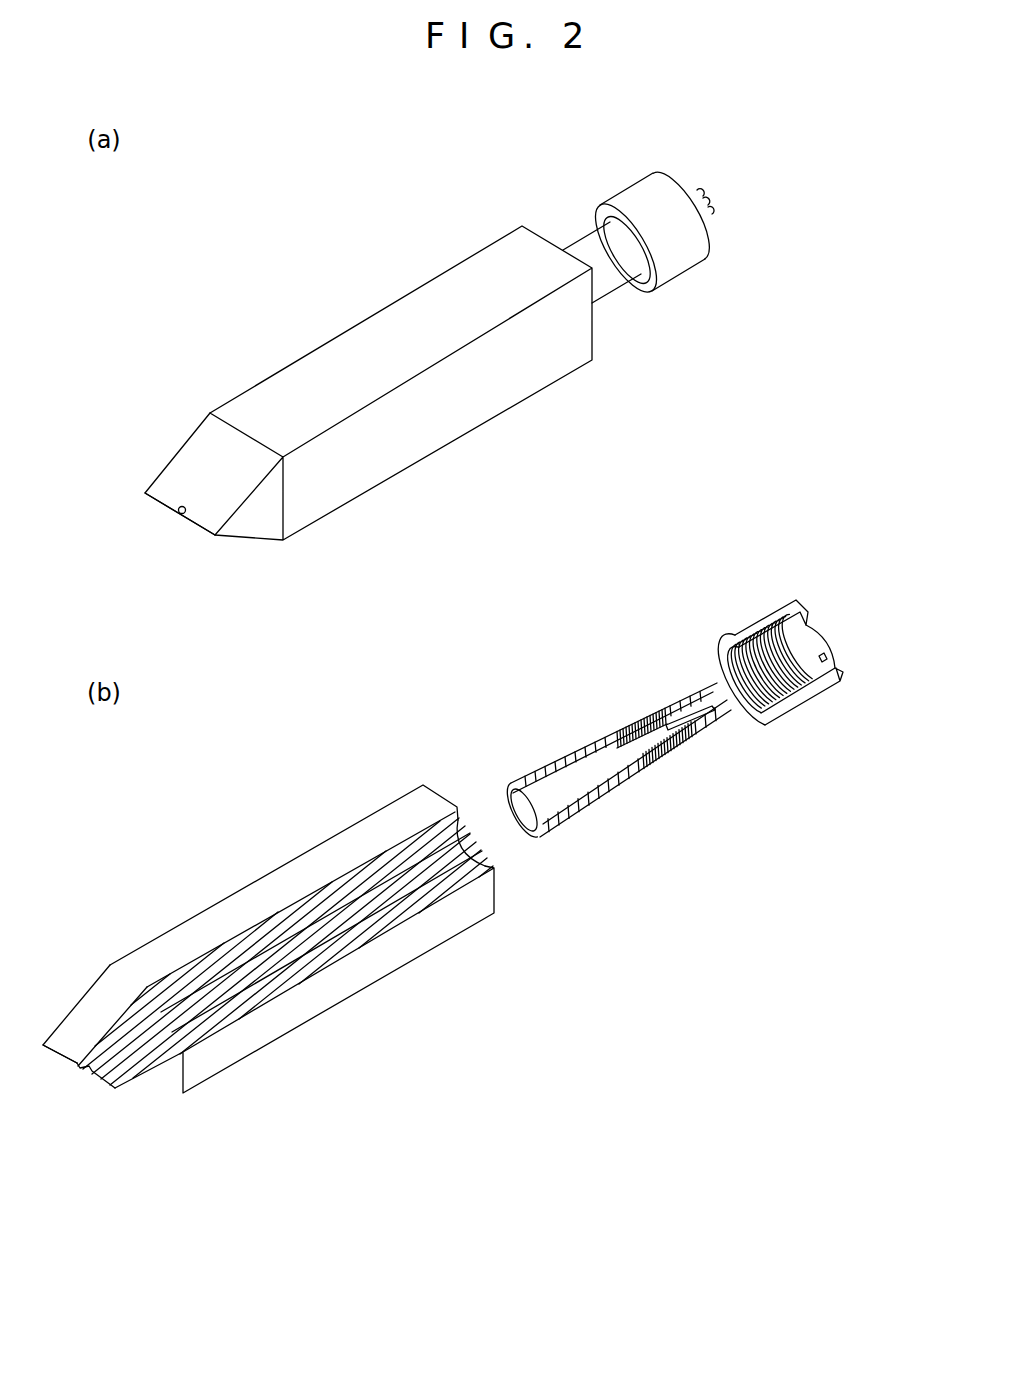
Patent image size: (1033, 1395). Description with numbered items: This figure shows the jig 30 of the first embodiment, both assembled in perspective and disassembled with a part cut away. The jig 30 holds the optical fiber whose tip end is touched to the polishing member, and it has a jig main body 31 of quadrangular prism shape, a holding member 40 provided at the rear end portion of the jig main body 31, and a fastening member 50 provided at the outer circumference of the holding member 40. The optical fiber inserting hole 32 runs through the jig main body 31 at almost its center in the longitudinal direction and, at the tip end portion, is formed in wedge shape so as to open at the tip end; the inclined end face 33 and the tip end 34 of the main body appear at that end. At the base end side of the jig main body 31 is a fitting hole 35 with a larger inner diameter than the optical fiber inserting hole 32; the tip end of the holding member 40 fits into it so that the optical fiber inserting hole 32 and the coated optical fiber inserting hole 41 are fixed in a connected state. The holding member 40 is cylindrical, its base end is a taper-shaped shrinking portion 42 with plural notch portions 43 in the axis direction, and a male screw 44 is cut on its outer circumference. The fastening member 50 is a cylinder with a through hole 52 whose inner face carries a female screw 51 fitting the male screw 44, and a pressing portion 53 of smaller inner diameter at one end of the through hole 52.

The jig 30 is at (475, 198).
The jig main body 31 is at (370, 353).
The optical fiber inserting hole 32 is at (183, 514).
The inclined end face 33 is at (213, 478).
The tip end 34 is at (159, 486).
The fitting hole 35 is at (427, 867).
The holding member 40 is at (592, 243).
The coated optical fiber inserting hole 41 is at (572, 786).
The shrinking portion 42 is at (705, 196).
The notch portions 43 is at (712, 217).
The male screw 44 is at (640, 703).
The fastening member 50 is at (663, 190).
The female screw 51 is at (762, 716).
The through hole 52 is at (738, 650).
The pressing portion 53 is at (814, 624).